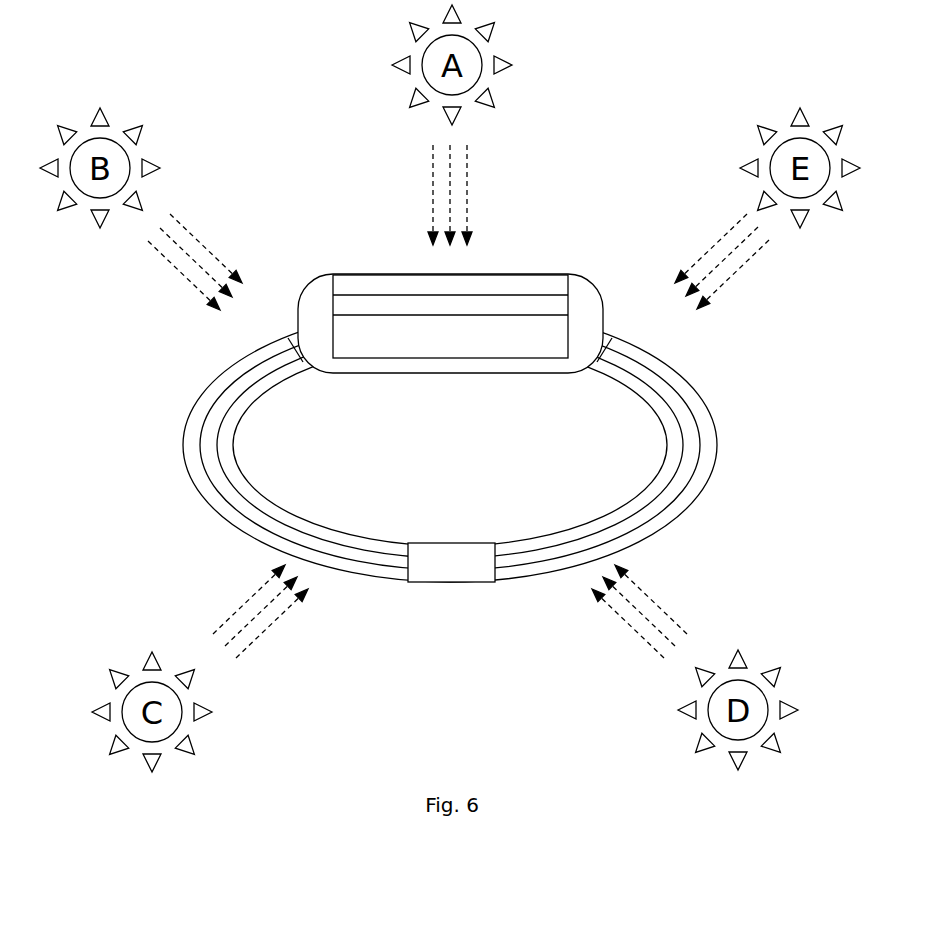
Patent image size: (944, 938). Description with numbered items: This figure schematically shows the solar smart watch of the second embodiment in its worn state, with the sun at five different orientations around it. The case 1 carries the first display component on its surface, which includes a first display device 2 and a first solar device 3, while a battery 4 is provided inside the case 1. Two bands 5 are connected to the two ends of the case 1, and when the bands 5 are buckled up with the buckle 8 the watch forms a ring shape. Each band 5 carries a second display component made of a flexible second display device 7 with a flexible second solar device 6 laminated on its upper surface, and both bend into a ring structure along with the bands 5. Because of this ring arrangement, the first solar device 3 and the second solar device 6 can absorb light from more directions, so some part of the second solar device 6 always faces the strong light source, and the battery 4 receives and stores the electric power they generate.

The case 1 is at (590, 317).
The first display device 2 is at (523, 307).
The first solar device 3 is at (472, 286).
The battery 4 is at (450, 337).
The band 5 is at (255, 497).
The second solar device 6 is at (210, 498).
The second display device 7 is at (237, 397).
The buckle 8 is at (452, 560).